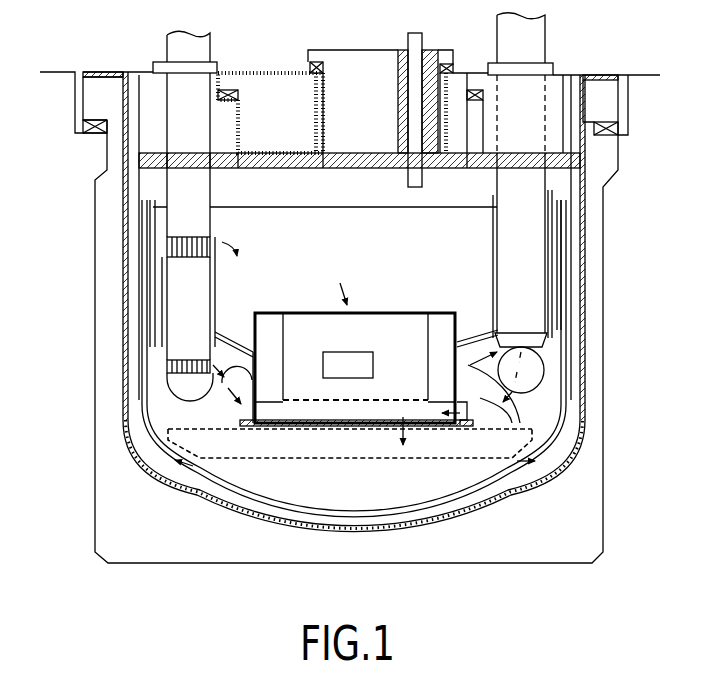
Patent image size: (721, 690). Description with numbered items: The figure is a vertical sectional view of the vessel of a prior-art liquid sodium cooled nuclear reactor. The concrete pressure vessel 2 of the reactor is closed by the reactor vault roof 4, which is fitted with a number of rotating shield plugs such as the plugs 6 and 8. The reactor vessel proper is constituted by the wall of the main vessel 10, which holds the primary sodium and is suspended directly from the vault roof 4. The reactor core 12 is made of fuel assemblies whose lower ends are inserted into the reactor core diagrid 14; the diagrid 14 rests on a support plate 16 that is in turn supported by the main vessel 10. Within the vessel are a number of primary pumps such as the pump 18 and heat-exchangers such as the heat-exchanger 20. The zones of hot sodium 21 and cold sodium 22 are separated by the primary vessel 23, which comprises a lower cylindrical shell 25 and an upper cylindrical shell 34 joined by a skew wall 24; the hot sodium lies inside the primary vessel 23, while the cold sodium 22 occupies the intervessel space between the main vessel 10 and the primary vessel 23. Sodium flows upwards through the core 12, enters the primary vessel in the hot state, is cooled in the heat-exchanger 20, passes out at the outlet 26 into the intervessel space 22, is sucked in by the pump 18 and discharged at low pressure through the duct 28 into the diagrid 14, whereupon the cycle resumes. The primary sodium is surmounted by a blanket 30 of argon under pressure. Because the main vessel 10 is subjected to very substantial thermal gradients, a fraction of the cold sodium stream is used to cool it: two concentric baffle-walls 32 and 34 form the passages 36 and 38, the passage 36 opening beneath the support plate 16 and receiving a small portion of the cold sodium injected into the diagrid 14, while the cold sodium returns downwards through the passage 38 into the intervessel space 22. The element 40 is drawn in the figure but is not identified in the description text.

The concrete pressure vessel 2 is at (641, 254).
The reactor vault roof 4 is at (278, 70).
The rotating shield plug 6 is at (373, 62).
The rotating shield plug 8 is at (468, 72).
The main vessel 10 is at (580, 180).
The reactor core 12 is at (374, 277).
The reactor core diagrid 14 is at (367, 415).
The support plate 16 is at (285, 462).
The primary pump 18 is at (530, 43).
The heat-exchanger 20 is at (170, 43).
The hot sodium 21 is at (360, 244).
The cold sodium 22 is at (550, 387).
The primary vessel 23 is at (233, 388).
The skew wall 24 is at (480, 337).
The lower cylindrical shell 25 is at (253, 377).
The heat-exchanger outlet 26 is at (177, 377).
The duct 28 is at (540, 412).
The blanket of argon 30 is at (278, 201).
The baffle-wall 32 is at (140, 372).
The upper cylindrical shell 34 is at (150, 195).
The passage 36 is at (145, 402).
The passage 38 is at (552, 353).
The vessel wall 40 is at (123, 430).